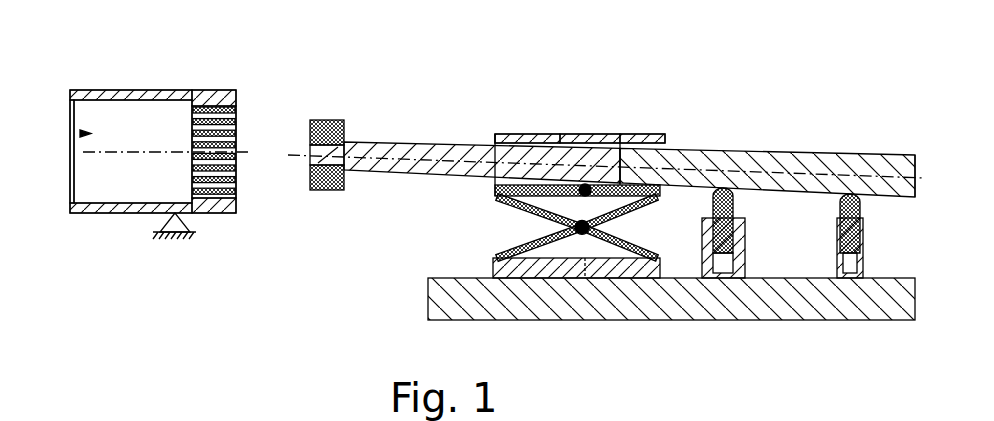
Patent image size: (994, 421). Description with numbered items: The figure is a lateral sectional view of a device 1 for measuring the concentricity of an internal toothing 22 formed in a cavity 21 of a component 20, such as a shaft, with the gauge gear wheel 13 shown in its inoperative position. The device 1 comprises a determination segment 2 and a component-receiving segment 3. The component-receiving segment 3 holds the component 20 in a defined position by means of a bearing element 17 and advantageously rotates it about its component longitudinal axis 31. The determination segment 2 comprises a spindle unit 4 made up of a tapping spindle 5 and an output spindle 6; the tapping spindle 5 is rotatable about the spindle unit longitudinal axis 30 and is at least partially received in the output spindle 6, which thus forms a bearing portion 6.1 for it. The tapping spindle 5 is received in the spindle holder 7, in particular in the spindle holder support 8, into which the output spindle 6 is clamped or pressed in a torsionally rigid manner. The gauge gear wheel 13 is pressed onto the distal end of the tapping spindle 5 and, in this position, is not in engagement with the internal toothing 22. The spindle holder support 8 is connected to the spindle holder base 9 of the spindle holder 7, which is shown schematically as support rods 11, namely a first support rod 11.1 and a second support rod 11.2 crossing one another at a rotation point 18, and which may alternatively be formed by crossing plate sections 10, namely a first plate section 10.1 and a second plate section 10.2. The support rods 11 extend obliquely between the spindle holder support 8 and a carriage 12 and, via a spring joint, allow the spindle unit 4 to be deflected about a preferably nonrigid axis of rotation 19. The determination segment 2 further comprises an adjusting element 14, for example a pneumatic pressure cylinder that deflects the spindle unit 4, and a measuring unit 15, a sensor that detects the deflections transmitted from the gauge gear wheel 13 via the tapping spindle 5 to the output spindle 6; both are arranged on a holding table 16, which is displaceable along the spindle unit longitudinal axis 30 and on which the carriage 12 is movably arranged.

The device 1 is at (601, 198).
The determination segment 2 is at (838, 113).
The component-receiving segment 3 is at (135, 161).
The spindle unit 4 is at (557, 111).
The tapping spindle 5 is at (390, 140).
The output spindle 6 is at (906, 153).
The bearing portion 6.1 is at (530, 133).
The spindle holder 7 is at (578, 98).
The spindle holder support 8 is at (623, 133).
The spindle holder base 9 is at (527, 236).
The plate sections 10 is at (527, 236).
The first plate section 10.1 is at (641, 215).
The second plate section 10.2 is at (641, 242).
The support rods 11 is at (471, 228).
The first support rod 11.1 is at (525, 242).
The second support rod 11.2 is at (523, 212).
The carriage 12 is at (612, 280).
The gauge gear wheel 13 is at (326, 118).
The adjusting element 14 is at (746, 236).
The measuring unit 15 is at (864, 240).
The holding table 16 is at (428, 296).
The bearing element 17 is at (178, 236).
The rotation point 18 is at (585, 280).
The axis of rotation 19 is at (590, 133).
The component 20 is at (141, 90).
The cavity 21 is at (73, 125).
The internal toothing 22 is at (214, 215).
The spindle unit longitudinal axis 30 is at (298, 160).
The component longitudinal axis 31 is at (80, 168).